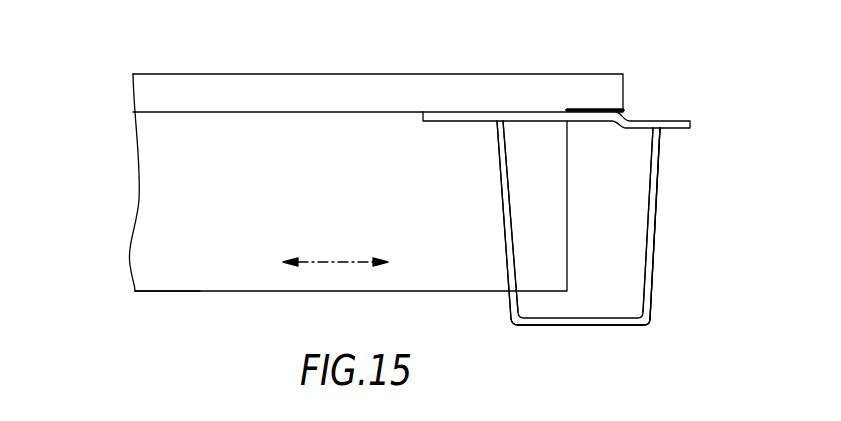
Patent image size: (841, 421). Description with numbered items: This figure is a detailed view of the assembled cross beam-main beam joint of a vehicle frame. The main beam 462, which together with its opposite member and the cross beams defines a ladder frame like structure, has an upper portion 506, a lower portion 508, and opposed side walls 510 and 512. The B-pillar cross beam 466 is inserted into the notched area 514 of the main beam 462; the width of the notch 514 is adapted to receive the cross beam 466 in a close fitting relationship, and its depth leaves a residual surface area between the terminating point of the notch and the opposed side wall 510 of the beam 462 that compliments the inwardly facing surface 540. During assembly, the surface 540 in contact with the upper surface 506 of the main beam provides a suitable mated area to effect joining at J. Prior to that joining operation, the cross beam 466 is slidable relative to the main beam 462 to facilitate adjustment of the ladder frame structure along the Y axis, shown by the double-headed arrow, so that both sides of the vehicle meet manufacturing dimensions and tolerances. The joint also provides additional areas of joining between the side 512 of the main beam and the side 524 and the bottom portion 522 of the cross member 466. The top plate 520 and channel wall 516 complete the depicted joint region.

The top plate 520 is at (383, 74).
The side of cross member 524 is at (155, 198).
The B-pillar cross beam 466 is at (243, 292).
The bottom portion of cross member 522 is at (152, 292).
The channel member 516 is at (497, 121).
The notched area 514 is at (518, 290).
The side wall of main beam 512 is at (512, 323).
The lower portion of main beam 508 is at (595, 325).
The side wall of main beam 510 is at (653, 258).
The upper portion of main beam 506 is at (650, 119).
The inwardly facing surface 540 is at (590, 113).
The main beam 462 is at (660, 193).
The joining location J is at (613, 110).
The Y axis Y is at (350, 262).